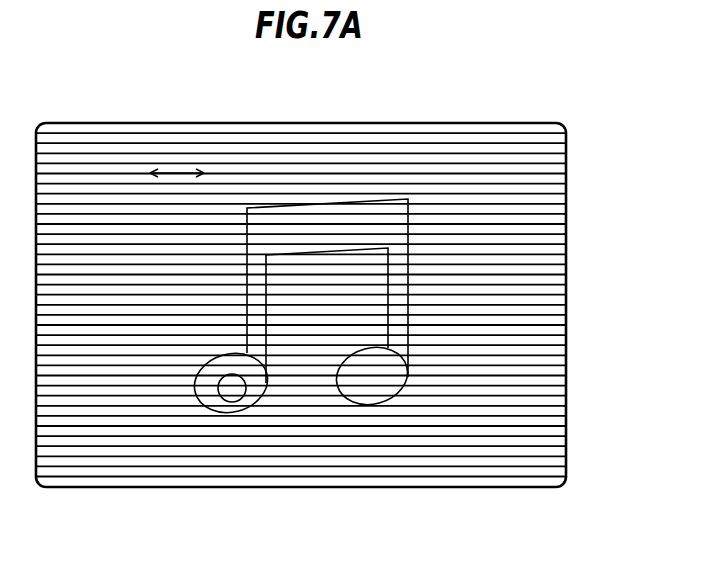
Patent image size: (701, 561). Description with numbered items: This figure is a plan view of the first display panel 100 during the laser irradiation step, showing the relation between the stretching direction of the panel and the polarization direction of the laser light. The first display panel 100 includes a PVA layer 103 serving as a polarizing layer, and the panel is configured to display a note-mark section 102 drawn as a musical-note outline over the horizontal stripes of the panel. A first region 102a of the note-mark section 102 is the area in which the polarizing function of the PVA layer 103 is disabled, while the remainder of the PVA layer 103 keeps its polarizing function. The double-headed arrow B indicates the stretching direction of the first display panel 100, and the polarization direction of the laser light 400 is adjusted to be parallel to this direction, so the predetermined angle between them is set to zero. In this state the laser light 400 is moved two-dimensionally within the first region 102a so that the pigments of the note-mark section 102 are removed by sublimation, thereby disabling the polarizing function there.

The first display panel 100 is at (567, 228).
The PVA layer 103 is at (528, 347).
The note-mark section 102 is at (320, 306).
The first region 102a is at (370, 390).
The laser light 400 is at (228, 401).
The stretching direction B is at (177, 172).